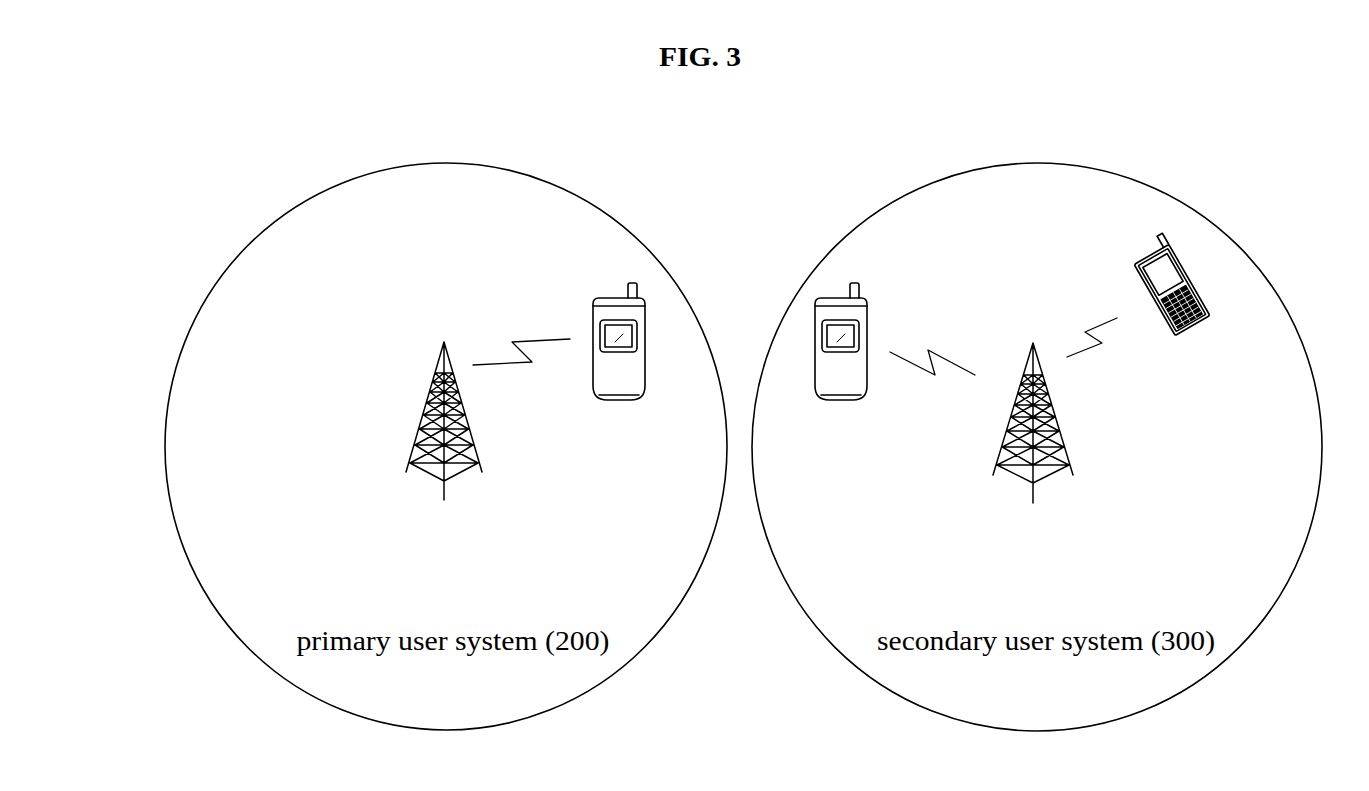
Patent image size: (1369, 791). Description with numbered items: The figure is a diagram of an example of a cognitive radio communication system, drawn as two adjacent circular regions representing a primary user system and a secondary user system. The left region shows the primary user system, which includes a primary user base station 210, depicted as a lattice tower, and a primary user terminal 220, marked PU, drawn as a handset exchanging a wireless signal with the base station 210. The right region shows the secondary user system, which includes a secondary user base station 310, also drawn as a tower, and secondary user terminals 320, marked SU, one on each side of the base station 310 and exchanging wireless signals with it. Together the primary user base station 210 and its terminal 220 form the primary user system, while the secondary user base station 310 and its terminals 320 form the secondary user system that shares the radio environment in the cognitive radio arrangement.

The primary user base station 210 is at (448, 307).
The primary user terminal (PU) 220 is at (648, 273).
The secondary user base station 310 is at (1030, 327).
The secondary user terminal (SU) 320 is at (862, 272).